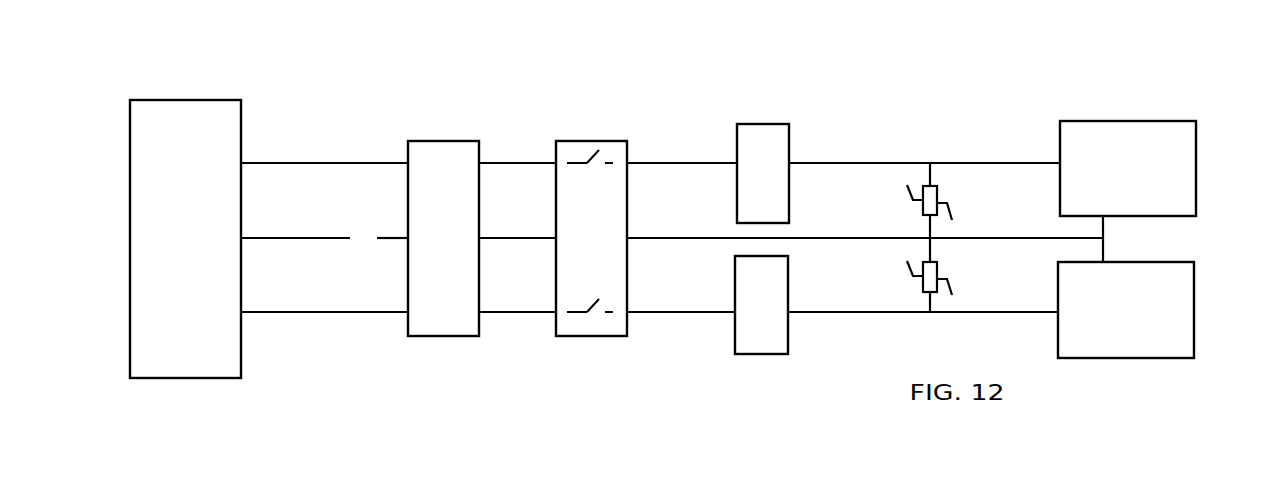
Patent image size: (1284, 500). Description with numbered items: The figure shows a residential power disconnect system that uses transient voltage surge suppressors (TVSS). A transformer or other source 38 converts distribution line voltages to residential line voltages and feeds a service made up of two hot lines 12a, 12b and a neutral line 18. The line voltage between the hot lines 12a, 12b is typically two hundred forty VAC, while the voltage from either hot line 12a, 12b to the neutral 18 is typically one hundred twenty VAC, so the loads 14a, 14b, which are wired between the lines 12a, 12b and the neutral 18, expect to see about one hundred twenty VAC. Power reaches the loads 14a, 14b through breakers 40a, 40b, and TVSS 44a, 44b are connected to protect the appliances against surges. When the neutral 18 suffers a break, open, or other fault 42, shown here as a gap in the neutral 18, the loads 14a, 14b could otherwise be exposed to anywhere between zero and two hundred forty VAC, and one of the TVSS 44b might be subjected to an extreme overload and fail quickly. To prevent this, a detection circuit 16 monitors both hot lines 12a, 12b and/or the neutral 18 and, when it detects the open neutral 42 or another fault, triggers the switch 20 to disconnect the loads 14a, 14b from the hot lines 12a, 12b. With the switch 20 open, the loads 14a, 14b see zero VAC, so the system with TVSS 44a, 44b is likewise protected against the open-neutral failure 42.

The transformer or other source 38 is at (164, 202).
The hot line 12a is at (314, 97).
The hot line 12b is at (324, 351).
The neutral line 18 is at (324, 295).
The open neutral fault 42 is at (336, 156).
The detection circuit 16 is at (443, 196).
The switch 20 is at (564, 249).
The breaker 40a is at (740, 138).
The breaker 40b is at (737, 324).
The transient voltage surge suppressor 44a is at (888, 167).
The transient voltage surge suppressor 44b is at (888, 306).
The load 14a is at (1154, 151).
The load 14b is at (1156, 290).